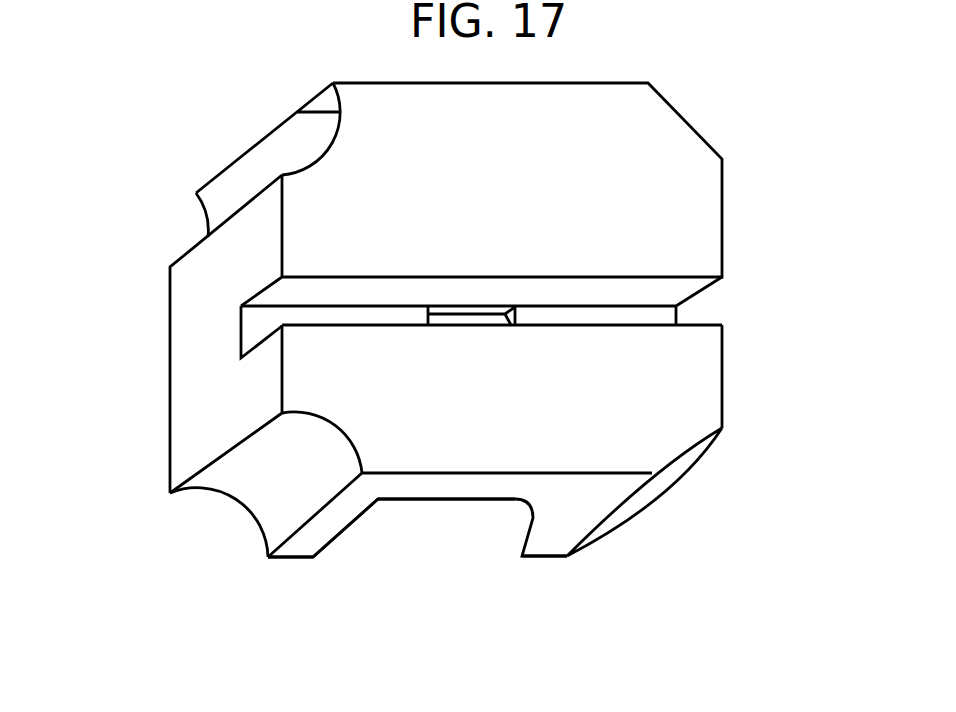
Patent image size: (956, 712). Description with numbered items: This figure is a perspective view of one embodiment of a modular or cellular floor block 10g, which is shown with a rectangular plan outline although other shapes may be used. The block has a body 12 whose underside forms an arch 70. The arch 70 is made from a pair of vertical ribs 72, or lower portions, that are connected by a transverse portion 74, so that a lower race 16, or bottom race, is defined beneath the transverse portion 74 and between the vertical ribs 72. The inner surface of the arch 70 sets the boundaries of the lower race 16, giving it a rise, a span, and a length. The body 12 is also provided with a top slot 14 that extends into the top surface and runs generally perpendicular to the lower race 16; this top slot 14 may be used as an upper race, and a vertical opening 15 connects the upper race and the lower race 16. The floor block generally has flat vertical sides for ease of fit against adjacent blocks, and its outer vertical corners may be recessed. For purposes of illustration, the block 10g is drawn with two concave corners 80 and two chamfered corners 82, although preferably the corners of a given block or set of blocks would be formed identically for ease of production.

The floor block 10g is at (83, 100).
The body 12 is at (188, 294).
The top slot 14 is at (735, 306).
The vertical opening 15 is at (432, 322).
The lower race 16 is at (417, 562).
The arch 70 is at (344, 540).
The vertical ribs 72 is at (303, 540).
The transverse portion 74 is at (478, 492).
The concave corners 80 is at (303, 112).
The chamfered corners 82 is at (693, 128).